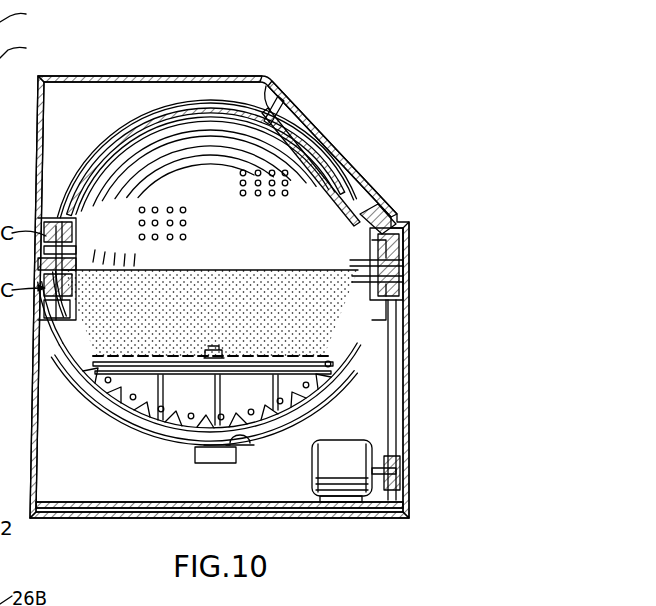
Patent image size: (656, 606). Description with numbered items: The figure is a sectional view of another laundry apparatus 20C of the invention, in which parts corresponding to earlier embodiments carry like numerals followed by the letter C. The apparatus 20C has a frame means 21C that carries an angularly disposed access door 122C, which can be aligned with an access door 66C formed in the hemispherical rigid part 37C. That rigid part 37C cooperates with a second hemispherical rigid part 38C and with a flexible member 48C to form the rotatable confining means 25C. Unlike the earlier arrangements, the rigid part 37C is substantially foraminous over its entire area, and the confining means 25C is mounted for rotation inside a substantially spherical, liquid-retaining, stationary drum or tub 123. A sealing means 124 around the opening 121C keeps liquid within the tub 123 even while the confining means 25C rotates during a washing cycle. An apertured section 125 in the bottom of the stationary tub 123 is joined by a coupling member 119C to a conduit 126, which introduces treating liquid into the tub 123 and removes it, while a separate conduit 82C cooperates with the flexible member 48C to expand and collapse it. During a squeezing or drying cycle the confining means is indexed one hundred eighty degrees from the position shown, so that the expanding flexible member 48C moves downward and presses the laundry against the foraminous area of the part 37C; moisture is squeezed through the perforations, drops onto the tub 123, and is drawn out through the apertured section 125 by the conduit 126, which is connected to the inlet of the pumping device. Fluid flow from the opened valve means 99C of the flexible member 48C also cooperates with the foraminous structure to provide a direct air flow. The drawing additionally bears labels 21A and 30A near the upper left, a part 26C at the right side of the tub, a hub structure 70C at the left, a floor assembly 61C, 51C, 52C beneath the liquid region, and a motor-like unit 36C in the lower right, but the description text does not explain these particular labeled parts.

The cabinet 21A is at (30, 14).
The door 30A is at (30, 46).
The laundry apparatus 20C is at (268, 54).
The frame means 21C is at (172, 76).
The opening 121C is at (298, 112).
The angularly disposed access door 122C is at (345, 157).
The sealing means 124 is at (266, 96).
The access door 66C is at (362, 190).
The tub support 26C is at (404, 250).
The stationary tub 123 is at (154, 114).
The confining means 25C is at (128, 138).
The hemispherical rigid part 37C is at (98, 172).
The bearing housing 70C is at (60, 250).
The flexible member 48C is at (287, 278).
The valve means 99C is at (214, 348).
The drum floor 61C is at (172, 352).
The support plate 51C is at (260, 362).
The fin ring 52C is at (300, 404).
The conduit 126 is at (136, 436).
The conduit 82C is at (92, 380).
The apertured section 125 is at (242, 448).
The coupling member 119C is at (216, 464).
The motor 36C is at (318, 480).
The hemispherical rigid part 38C is at (366, 380).